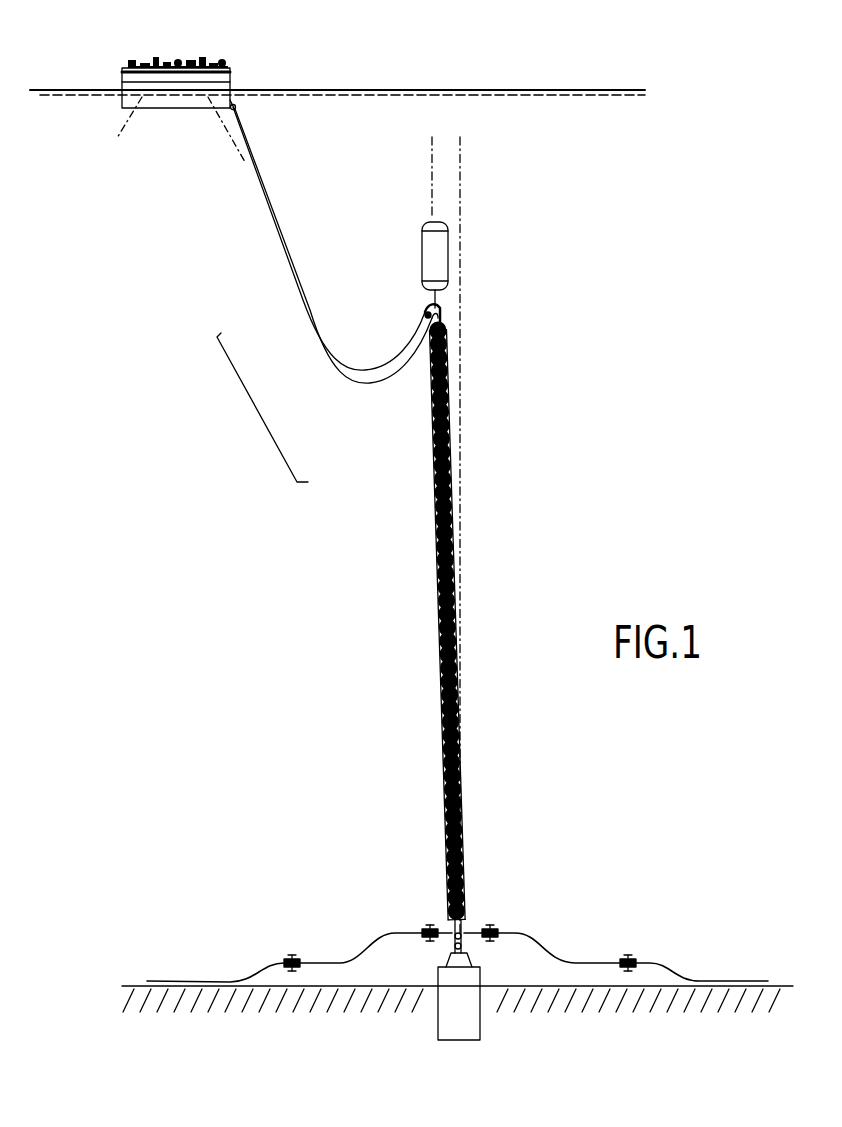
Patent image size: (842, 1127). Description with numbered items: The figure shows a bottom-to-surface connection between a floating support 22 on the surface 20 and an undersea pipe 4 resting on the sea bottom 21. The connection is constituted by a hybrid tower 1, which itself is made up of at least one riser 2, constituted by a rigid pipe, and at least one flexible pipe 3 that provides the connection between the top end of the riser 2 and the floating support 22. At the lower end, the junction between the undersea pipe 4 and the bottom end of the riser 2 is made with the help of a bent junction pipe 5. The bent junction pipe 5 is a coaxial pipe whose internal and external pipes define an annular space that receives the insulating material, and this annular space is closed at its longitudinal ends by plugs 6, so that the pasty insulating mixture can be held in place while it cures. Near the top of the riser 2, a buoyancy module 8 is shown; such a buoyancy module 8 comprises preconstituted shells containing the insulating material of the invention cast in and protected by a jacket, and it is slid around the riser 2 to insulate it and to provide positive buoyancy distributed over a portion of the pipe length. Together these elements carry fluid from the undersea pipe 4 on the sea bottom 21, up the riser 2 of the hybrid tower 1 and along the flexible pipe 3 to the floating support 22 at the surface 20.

The hybrid tower 1 is at (252, 418).
The riser 2 is at (422, 490).
The flexible pipe 3 is at (284, 320).
The undersea pipe 4 is at (186, 980).
The bent junction pipe 5 is at (338, 962).
The plug 6 is at (494, 928).
The buoyancy module 8 is at (449, 350).
The surface 20 is at (565, 88).
The sea bottom 21 is at (768, 980).
The floating support 22 is at (180, 80).